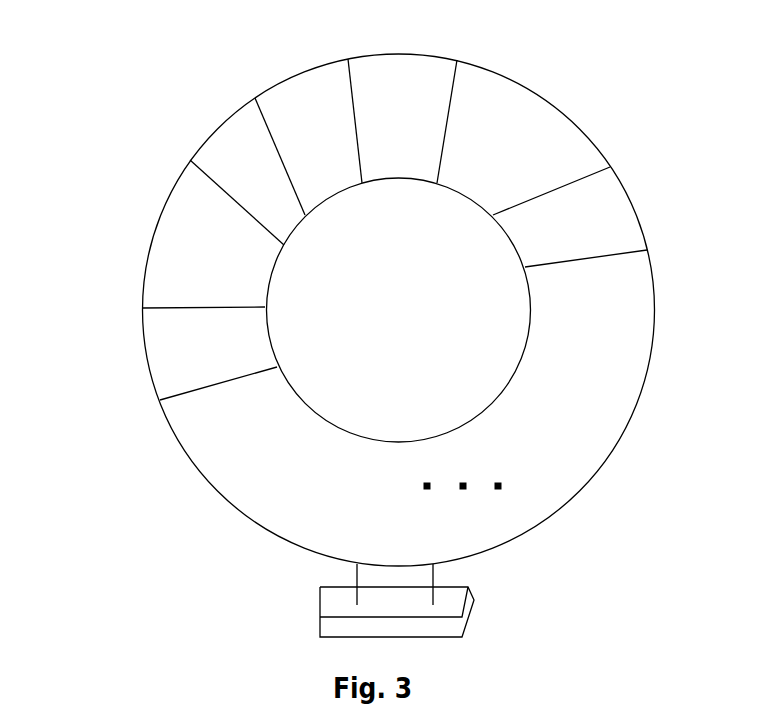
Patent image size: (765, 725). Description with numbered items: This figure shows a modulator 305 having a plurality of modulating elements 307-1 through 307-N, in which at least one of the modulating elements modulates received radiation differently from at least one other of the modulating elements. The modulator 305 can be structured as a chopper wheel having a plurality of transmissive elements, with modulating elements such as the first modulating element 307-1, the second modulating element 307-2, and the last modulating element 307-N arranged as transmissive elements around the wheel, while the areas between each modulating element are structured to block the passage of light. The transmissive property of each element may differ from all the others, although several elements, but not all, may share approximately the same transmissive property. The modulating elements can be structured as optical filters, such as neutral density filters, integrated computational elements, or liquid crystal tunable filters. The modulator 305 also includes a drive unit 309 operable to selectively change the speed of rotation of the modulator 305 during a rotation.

The modulator 305 is at (222, 36).
The modulating element 307-1 is at (398, 72).
The modulating element 307-2 is at (600, 192).
The modulating element 307-N is at (233, 140).
The drive unit 309 is at (318, 588).